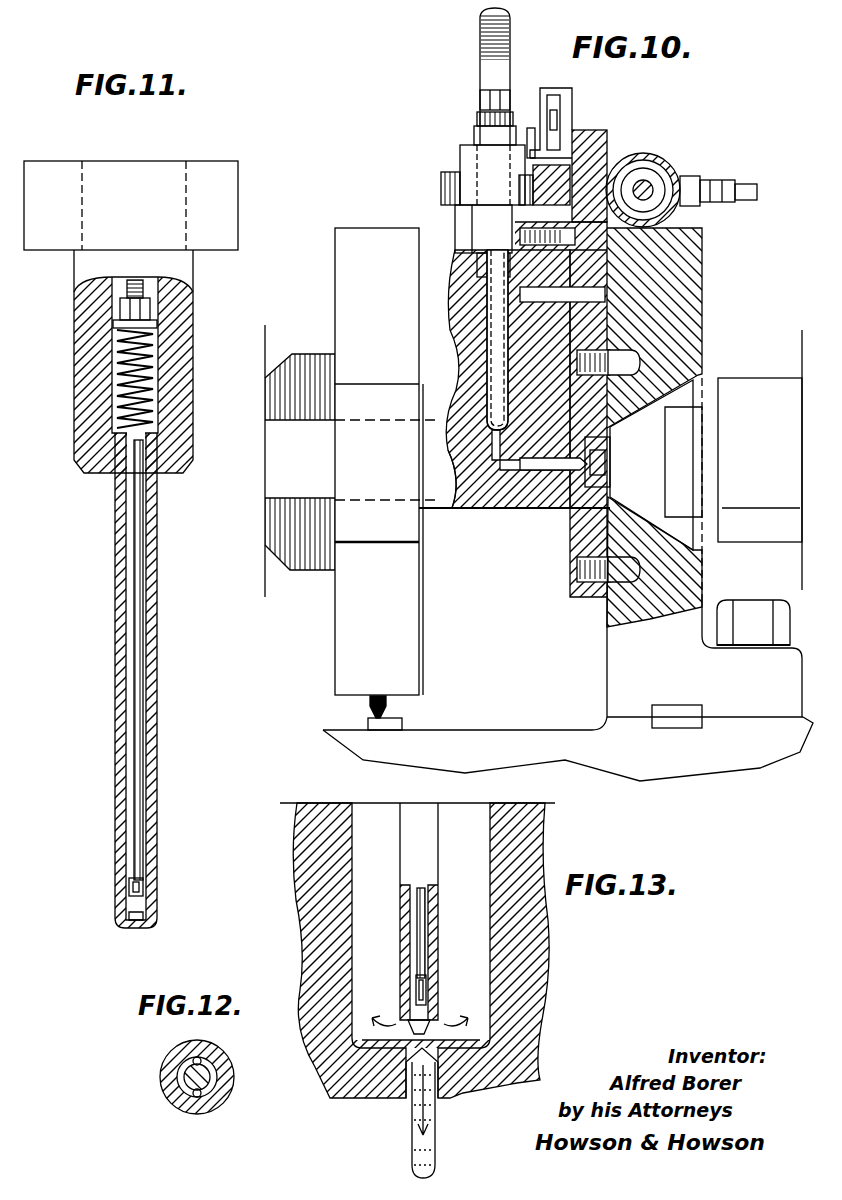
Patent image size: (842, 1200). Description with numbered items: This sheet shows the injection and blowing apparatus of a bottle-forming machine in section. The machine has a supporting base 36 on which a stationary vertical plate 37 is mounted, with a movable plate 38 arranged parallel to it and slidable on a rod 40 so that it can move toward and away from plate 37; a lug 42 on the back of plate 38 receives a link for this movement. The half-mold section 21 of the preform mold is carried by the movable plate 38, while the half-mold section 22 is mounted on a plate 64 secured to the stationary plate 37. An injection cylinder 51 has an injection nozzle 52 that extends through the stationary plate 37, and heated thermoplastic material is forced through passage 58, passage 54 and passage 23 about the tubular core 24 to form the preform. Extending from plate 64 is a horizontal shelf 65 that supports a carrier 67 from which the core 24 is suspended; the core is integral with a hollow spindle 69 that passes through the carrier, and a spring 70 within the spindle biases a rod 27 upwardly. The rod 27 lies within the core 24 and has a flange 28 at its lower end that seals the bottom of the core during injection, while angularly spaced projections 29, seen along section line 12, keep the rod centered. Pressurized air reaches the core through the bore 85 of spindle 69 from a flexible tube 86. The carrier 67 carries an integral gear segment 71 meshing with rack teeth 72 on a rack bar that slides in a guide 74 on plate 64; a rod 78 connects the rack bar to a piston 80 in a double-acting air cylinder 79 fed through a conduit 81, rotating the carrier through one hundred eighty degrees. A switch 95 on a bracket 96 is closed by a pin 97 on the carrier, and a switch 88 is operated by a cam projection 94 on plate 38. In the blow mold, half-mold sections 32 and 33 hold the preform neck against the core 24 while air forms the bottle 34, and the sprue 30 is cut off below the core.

In FIG. 10, the half-mold section 21 is at (456, 500).
In FIG. 10, the half-mold section 22 is at (540, 478).
In FIG. 10, the passage 23 is at (474, 485).
In FIG. 11, the tubular core 24 is at (168, 630).
In FIG. 12, the tubular core 24 is at (194, 1113).
In FIG. 10, the tubular core 24 is at (490, 372).
In FIG. 13, the tubular core 24 is at (402, 824).
In FIG. 11, the rod 27 is at (136, 545).
In FIG. 12, the rod 27 is at (212, 1090).
In FIG. 13, the rod 27 is at (428, 898).
In FIG. 11, the flange 28 is at (136, 930).
In FIG. 13, the flange 28 is at (416, 1036).
In FIG. 11, the angularly spaced projections 29 is at (145, 885).
In FIG. 12, the angularly spaced projections 29 is at (193, 1092).
In FIG. 13, the angularly spaced projections 29 is at (418, 995).
In FIG. 13, the sprue 30 is at (412, 1150).
In FIG. 13, the half-mold section 32 is at (305, 934).
In FIG. 13, the half-mold section 33 is at (545, 933).
In FIG. 13, the bottle 34 is at (488, 832).
In FIG. 10, the supporting base 36 is at (690, 765).
In FIG. 10, the stationary vertical plate 37 is at (698, 255).
In FIG. 10, the movable plate 38 is at (335, 250).
In FIG. 10, the rod 40 is at (421, 600).
In FIG. 10, the lug 42 is at (298, 354).
In FIG. 10, the injection cylinder 51 is at (780, 505).
In FIG. 10, the injection nozzle 52 is at (572, 480).
In FIG. 10, the passage 54 is at (527, 475).
In FIG. 10, the passage 58 is at (690, 385).
In FIG. 10, the plate 64 is at (590, 165).
In FIG. 10, the horizontal shelf 65 is at (460, 218).
In FIG. 11, the carrier 67 is at (232, 195).
In FIG. 10, the carrier 67 is at (465, 150).
In FIG. 11, the hollow spindle 69 is at (185, 325).
In FIG. 10, the hollow spindle 69 is at (478, 262).
In FIG. 11, the spring 70 is at (118, 383).
In FIG. 10, the gear segment 71 is at (442, 182).
In FIG. 10, the rack teeth 72 is at (535, 178).
In FIG. 10, the guide 74 is at (608, 172).
In FIG. 10, the rod 78 is at (672, 205).
In FIG. 10, the double-acting air cylinder 79 is at (658, 165).
In FIG. 10, the piston 80 is at (686, 180).
In FIG. 10, the conduit 81 is at (748, 186).
In FIG. 11, the bore 85 is at (120, 305).
In FIG. 10, the flexible tube 86 is at (482, 30).
In FIG. 10, the switch 88 is at (405, 722).
In FIG. 10, the cam projection 94 is at (370, 706).
In FIG. 10, the switch 95 is at (556, 98).
In FIG. 10, the bracket 96 is at (570, 96).
In FIG. 10, the pin 97 is at (535, 142).
In FIG. 11, the section line 12 is at (143, 897).